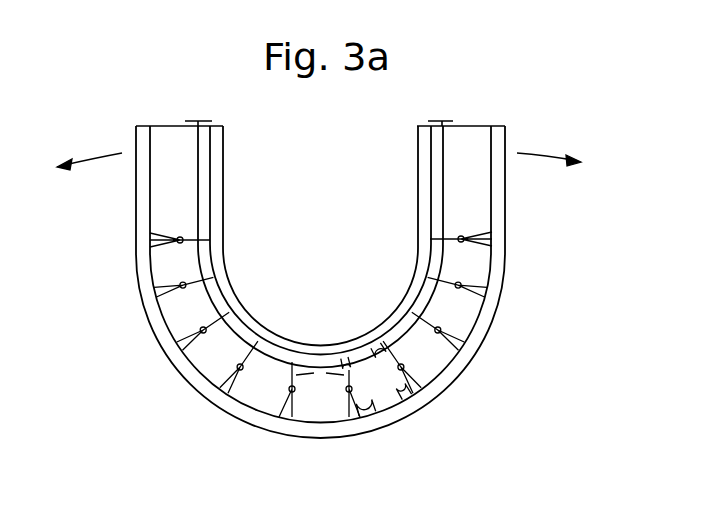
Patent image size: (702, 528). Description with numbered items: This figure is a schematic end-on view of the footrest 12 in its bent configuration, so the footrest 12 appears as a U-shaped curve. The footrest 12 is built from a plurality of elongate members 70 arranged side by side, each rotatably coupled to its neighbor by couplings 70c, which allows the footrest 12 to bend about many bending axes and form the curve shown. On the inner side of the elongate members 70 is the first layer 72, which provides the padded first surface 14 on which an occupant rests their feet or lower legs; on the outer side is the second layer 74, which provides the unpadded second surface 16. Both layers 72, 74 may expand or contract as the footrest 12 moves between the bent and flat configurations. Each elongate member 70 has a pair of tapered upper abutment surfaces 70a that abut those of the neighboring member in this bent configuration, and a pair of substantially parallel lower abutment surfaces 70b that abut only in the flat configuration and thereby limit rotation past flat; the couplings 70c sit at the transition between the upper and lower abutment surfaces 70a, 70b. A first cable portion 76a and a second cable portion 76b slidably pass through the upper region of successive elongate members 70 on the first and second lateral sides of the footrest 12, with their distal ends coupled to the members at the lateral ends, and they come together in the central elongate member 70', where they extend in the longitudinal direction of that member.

The footrest 12 is at (205, 350).
The first surface 14 is at (224, 197).
The second surface 16 is at (498, 315).
The first layer 72 is at (218, 276).
The second layer 74 is at (458, 362).
The first cable portion 76a is at (199, 178).
The second cable portion 76b is at (442, 178).
The elongate member 70 is at (321, 343).
The central elongate member 70' is at (301, 421).
The upper abutment side surface 70a is at (375, 345).
The lower abutment side surface 70b is at (373, 410).
The coupling 70c is at (258, 352).